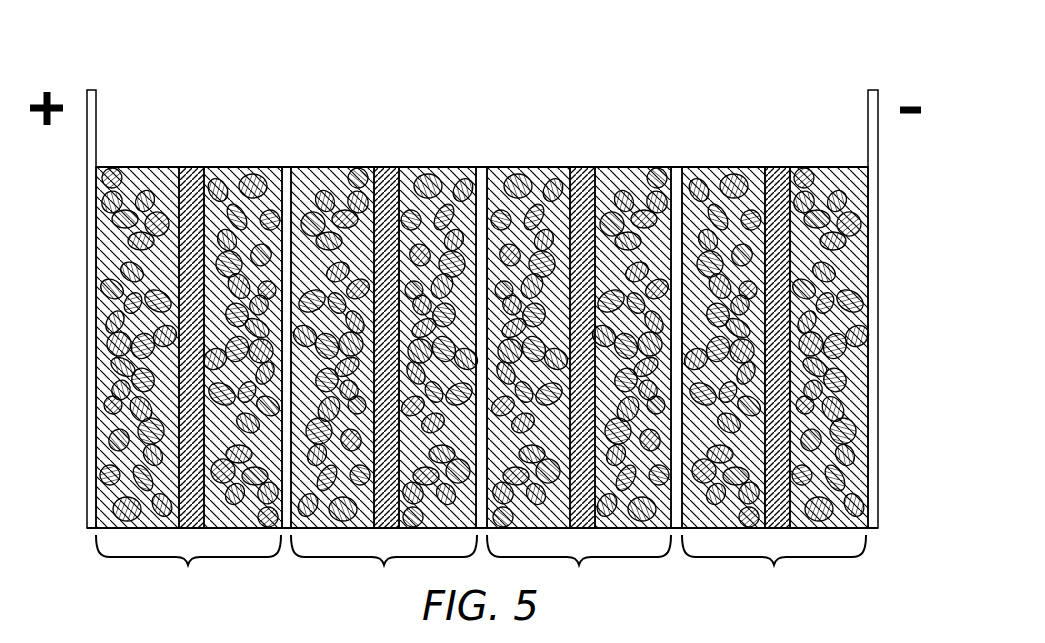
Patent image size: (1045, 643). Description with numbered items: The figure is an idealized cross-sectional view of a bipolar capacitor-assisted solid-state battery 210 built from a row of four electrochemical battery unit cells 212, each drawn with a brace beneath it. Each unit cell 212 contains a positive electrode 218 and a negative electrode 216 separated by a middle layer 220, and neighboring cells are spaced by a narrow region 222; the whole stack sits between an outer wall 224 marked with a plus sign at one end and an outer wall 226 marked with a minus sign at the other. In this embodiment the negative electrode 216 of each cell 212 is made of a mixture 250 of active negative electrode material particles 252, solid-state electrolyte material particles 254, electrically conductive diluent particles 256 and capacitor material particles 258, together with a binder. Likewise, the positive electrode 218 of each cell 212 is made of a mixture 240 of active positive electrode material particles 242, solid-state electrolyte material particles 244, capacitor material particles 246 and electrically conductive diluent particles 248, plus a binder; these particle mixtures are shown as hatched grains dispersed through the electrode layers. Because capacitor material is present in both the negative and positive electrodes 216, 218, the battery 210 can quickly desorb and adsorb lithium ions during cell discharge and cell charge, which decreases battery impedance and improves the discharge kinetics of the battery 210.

The bipolar capacitor-assisted solid-state battery 210 is at (62, 76).
The electrochemical battery unit cell 212 is at (481, 565).
The negative electrode 216 is at (245, 167).
The positive electrode 218 is at (140, 167).
The separator 220 is at (195, 167).
The gap between units 222 is at (283, 167).
The positive current collector wall 224 is at (98, 105).
The negative current collector wall 226 is at (873, 97).
The mixture 240 is at (335, 152).
The active positive electrode material particles 242 is at (301, 167).
The solid-state electrolyte material particles 244 is at (320, 517).
The capacitor material particles 246 is at (345, 515).
The electrically conductive diluent particles 248 is at (355, 167).
The mixture 250 is at (621, 152).
The active negative electrode material particles 252 is at (607, 167).
The solid-state electrolyte material particles 254 is at (608, 498).
The electrically conductive diluent particles 256 is at (645, 167).
The capacitor material particles 258 is at (643, 506).